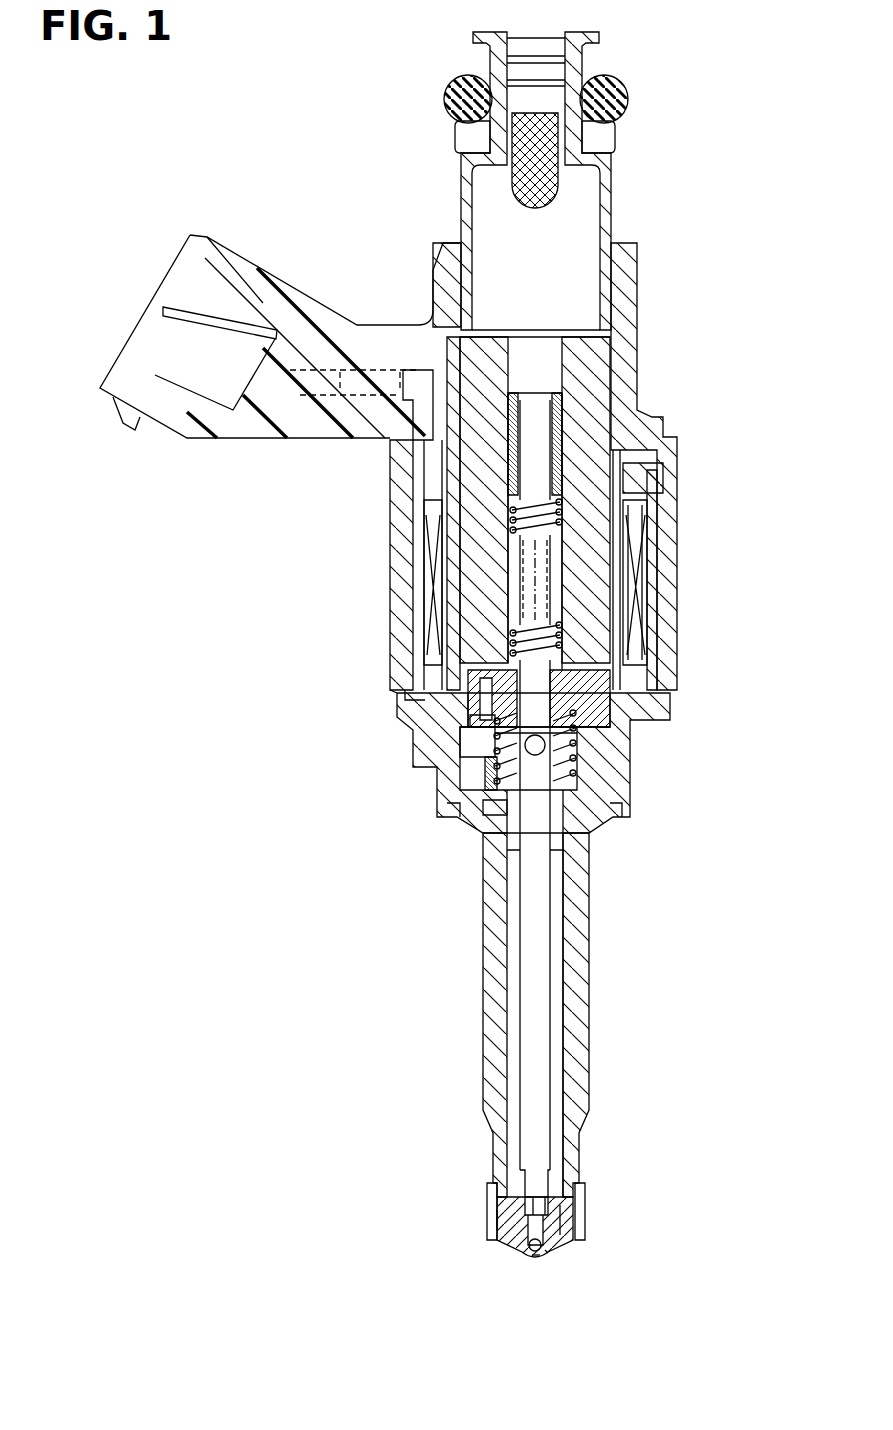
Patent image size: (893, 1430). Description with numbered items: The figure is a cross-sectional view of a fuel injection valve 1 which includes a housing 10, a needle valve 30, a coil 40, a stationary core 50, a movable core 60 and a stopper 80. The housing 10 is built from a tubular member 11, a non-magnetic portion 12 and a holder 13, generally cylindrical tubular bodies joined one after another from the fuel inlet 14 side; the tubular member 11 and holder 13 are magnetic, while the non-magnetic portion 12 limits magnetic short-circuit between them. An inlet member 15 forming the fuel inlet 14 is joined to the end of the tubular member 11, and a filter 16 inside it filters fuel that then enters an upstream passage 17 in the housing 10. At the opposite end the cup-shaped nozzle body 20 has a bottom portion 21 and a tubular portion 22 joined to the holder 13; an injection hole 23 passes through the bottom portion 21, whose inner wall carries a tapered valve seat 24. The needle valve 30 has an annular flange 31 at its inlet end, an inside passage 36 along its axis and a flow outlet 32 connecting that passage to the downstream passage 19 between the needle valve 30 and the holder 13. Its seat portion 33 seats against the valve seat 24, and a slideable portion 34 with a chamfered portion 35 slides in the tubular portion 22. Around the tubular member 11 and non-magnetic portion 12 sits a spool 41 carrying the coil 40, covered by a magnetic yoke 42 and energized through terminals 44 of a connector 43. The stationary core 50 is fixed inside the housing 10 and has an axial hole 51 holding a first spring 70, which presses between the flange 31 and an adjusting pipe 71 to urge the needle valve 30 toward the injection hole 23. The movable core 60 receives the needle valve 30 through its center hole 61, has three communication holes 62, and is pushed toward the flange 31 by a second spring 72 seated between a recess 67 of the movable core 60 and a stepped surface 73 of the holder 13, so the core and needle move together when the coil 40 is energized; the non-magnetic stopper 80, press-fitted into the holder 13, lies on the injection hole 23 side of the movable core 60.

The fuel injection valve 1 is at (693, 68).
The housing 10 is at (627, 355).
The tubular member 11 is at (432, 572).
The non-magnetic portion 12 is at (428, 658).
The holder 13 is at (490, 945).
The fuel inlet 14 is at (515, 33).
The inlet member 15 is at (460, 184).
The filter 16 is at (556, 178).
The upstream passage 17 is at (533, 258).
The downstream passage 19 is at (560, 1070).
The nozzle body 20 is at (560, 1243).
The bottom portion 21 is at (547, 1255).
The tubular portion 22 is at (570, 1217).
The injection hole 23 is at (537, 1258).
The valve seat 24 is at (493, 1230).
The needle valve 30 is at (540, 975).
The flange 31 is at (560, 670).
The flow outlet 32 is at (640, 762).
The seat portion 33 is at (523, 1250).
The slideable portion 34 is at (530, 1210).
The chamfered portion 35 is at (500, 1217).
The inside passage 36 is at (580, 700).
The coil 40 is at (640, 545).
The spool 41 is at (650, 567).
The yoke 42 is at (665, 600).
The connector 43 is at (232, 272).
The terminals 44 is at (165, 305).
The stationary core 50 is at (588, 387).
The hole 51 is at (562, 367).
The movable core 60 is at (415, 703).
The center hole 61 is at (457, 752).
The communication holes 62 is at (478, 722).
The recess 67 is at (582, 726).
The first spring 70 is at (530, 610).
The adjusting pipe 71 is at (553, 432).
The second spring 72 is at (505, 762).
The stepped surface 73 is at (500, 815).
The stopper 80 is at (578, 777).